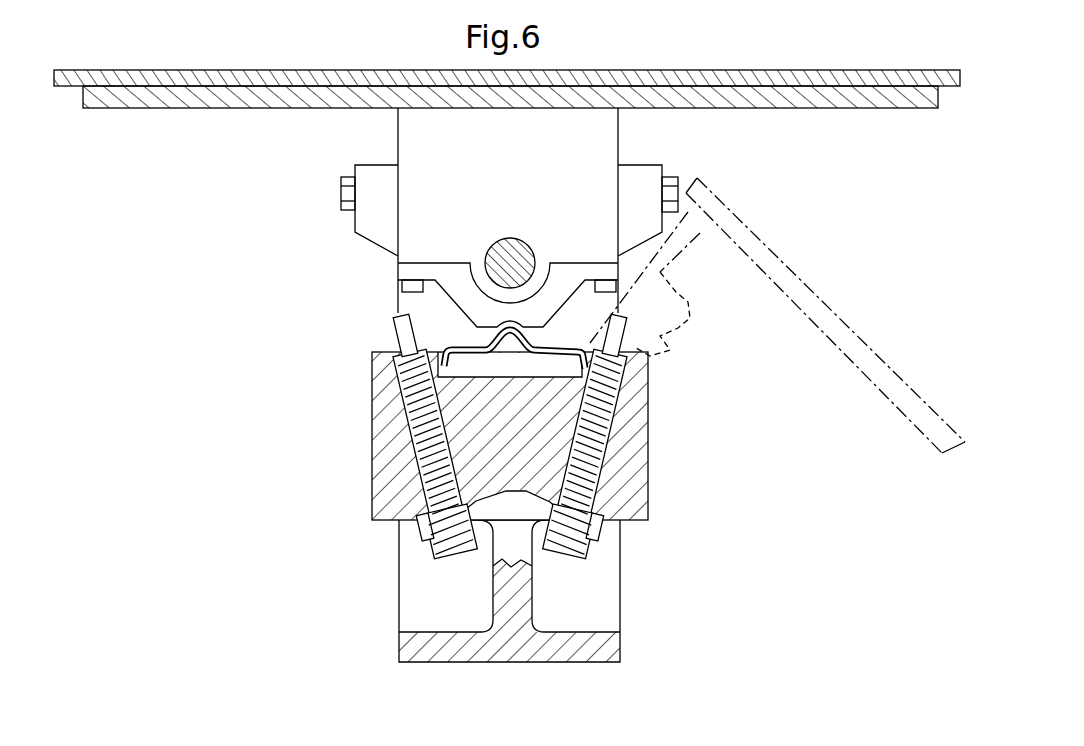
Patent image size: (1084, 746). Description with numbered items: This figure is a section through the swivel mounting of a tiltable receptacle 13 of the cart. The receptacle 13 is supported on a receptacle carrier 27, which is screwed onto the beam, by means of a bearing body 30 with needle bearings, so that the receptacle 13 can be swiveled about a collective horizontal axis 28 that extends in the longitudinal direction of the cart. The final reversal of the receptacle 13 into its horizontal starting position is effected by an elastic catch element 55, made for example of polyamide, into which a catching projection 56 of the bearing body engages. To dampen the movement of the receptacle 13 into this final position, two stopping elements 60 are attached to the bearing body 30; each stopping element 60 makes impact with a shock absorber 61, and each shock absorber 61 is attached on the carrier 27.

The receptacle 13 is at (282, 70).
The bearing body 30 is at (440, 178).
The stopping element 60 is at (377, 212).
The horizontal axis 28 is at (498, 256).
The receptacle carrier 27 is at (420, 302).
The catching projection 56 is at (475, 311).
The elastic catch element 55 is at (403, 383).
The shock absorber 61 is at (425, 426).